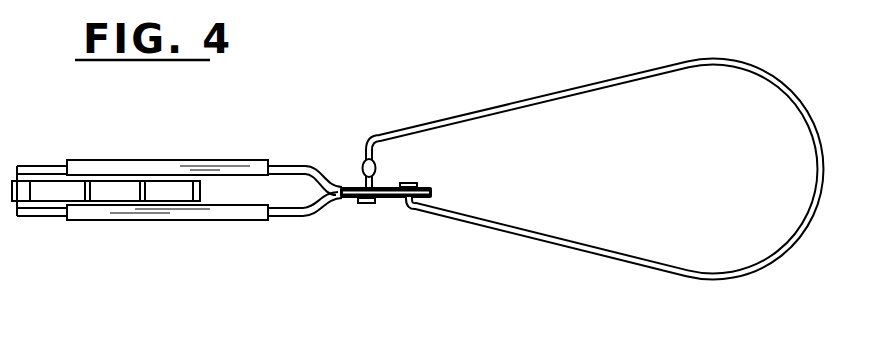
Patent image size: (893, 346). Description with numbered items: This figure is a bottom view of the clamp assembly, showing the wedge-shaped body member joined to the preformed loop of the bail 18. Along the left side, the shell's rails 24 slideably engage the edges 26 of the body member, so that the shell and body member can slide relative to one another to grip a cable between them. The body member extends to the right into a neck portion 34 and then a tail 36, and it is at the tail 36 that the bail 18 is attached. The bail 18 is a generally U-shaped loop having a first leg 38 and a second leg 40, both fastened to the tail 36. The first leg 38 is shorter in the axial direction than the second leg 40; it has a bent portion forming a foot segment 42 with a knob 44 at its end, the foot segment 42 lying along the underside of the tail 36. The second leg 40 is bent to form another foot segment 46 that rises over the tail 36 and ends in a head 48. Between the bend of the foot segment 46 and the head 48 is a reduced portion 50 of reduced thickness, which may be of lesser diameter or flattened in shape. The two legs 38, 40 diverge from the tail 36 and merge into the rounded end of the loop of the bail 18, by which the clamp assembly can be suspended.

The bail 18 is at (712, 172).
The rails 24 is at (138, 167).
The edges 26 is at (40, 165).
The neck portion 34 is at (315, 213).
The tail 36 is at (355, 185).
The first leg 38 is at (555, 245).
The second leg 40 is at (493, 115).
The foot segment 42 is at (412, 208).
The knob 44 is at (405, 182).
The foot segment 46 is at (370, 143).
The head 48 is at (367, 203).
The reduced portion 50 is at (374, 170).